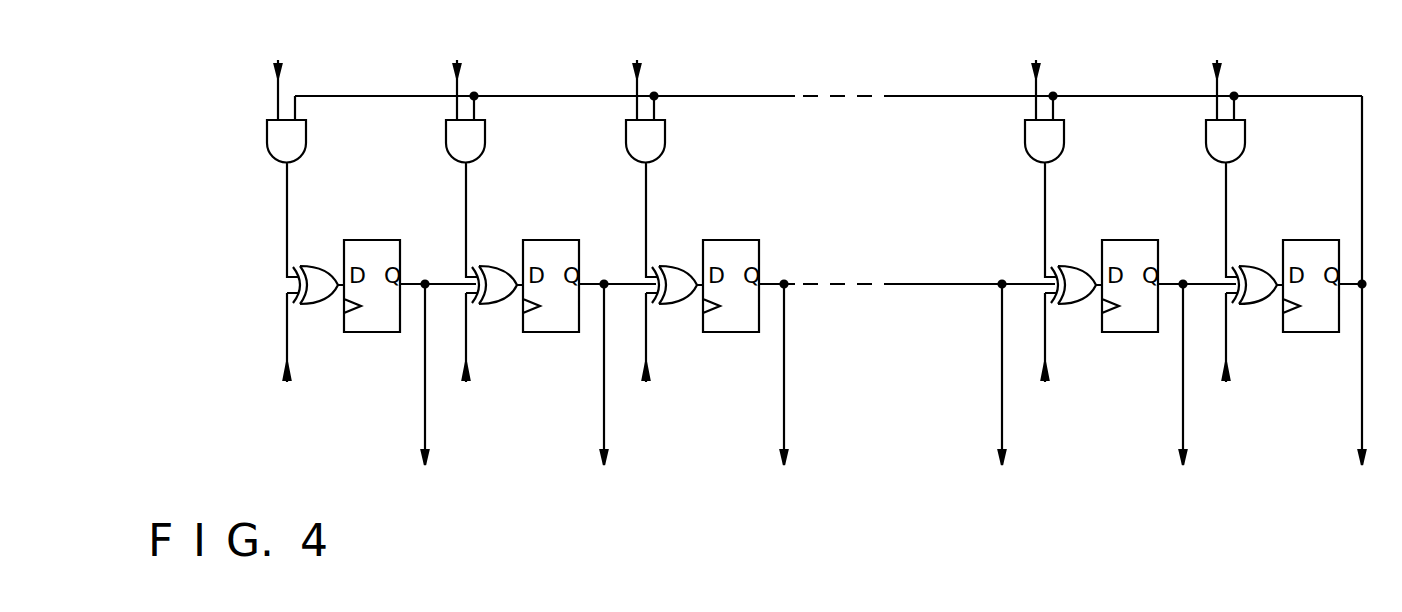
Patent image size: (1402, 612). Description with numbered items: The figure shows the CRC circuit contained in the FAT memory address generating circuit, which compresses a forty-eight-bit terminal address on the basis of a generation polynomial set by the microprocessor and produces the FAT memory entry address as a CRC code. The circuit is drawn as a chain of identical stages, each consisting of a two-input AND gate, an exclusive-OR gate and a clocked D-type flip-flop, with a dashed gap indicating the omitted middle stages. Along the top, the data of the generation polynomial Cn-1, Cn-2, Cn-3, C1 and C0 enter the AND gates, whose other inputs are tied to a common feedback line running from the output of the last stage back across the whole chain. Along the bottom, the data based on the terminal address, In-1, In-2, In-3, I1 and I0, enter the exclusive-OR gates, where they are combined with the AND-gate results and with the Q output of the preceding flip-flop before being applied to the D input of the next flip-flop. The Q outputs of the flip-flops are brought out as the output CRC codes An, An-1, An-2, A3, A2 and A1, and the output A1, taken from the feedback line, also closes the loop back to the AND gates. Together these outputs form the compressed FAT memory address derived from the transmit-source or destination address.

The generation polynomial data Cn-1 is at (286, 75).
The generation polynomial data Cn-2 is at (456, 75).
The generation polynomial data Cn-3 is at (636, 75).
The generation polynomial data C1 is at (1028, 75).
The generation polynomial data C0 is at (1210, 75).
The terminal address data In-1 is at (288, 358).
The terminal address data In-2 is at (466, 358).
The terminal address data In-3 is at (648, 358).
The terminal address data I1 is at (1041, 358).
The terminal address data I0 is at (1228, 358).
The output CRC code An is at (431, 394).
The output CRC code An-1 is at (596, 394).
The output CRC code An-2 is at (776, 394).
The output CRC code A3 is at (1006, 395).
The output CRC code A2 is at (1186, 394).
The output CRC code A1 is at (1361, 301).